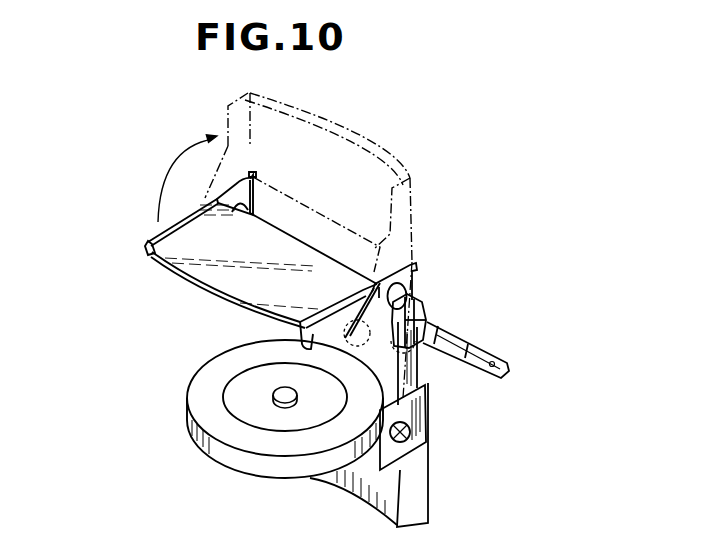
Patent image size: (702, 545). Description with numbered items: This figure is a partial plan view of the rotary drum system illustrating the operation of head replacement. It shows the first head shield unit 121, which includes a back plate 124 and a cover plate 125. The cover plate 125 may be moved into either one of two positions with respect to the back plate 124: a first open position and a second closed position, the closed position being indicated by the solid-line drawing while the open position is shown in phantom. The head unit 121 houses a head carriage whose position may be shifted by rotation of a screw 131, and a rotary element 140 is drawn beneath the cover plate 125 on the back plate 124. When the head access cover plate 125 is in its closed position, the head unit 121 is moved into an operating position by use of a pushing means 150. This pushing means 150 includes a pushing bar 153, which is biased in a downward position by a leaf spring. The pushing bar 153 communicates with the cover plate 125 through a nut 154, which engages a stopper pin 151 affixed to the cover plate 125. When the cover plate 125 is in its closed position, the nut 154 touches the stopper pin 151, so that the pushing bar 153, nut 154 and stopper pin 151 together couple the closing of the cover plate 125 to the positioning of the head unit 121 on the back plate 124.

The first head shield unit 121 is at (153, 229).
The back plate 124 is at (402, 496).
The cover plate 125 is at (358, 126).
The screw 131 is at (284, 405).
The disk 140 is at (184, 420).
The pushing means 150 is at (472, 331).
The stopper pin 151 is at (392, 312).
The pushing bar 153 is at (477, 357).
The nut 154 is at (410, 305).